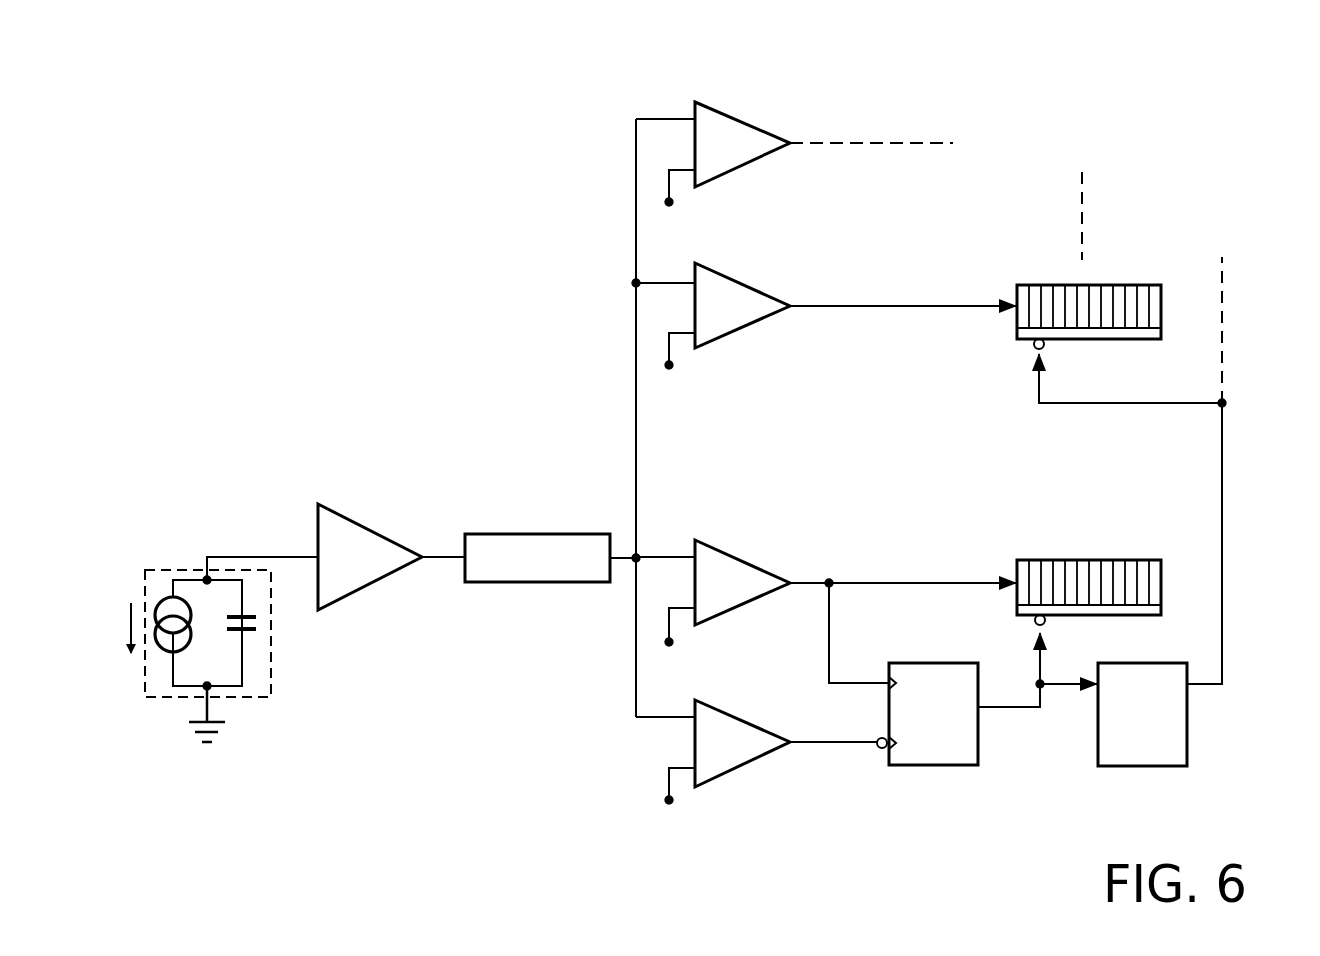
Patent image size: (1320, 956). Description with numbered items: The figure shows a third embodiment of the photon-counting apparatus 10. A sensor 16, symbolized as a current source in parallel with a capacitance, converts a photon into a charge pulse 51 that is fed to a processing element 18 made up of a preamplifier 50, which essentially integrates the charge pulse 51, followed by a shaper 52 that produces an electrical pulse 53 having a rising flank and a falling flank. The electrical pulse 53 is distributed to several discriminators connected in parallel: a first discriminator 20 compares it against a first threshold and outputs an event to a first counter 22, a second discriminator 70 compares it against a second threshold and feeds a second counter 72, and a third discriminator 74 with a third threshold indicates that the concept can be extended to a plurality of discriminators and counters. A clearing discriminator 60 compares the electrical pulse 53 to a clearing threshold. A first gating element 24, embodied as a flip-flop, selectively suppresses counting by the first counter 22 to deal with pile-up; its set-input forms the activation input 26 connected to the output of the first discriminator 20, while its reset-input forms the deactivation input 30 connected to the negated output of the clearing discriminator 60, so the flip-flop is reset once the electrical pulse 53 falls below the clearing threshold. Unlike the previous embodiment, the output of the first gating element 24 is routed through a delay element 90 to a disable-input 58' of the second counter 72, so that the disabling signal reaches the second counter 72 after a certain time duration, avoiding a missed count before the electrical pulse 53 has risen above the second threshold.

The apparatus 10 is at (221, 97).
The sensor 16 is at (185, 582).
The charge pulse 51 is at (262, 497).
The preamplifier 50 is at (370, 557).
The processing element 18 is at (447, 471).
The shaper 52 is at (537, 558).
The electrical pulse 53 is at (594, 482).
The third discriminator 74 is at (794, 171).
The second discriminator 70 is at (826, 332).
The first discriminator 20 is at (826, 610).
The clearing discriminator 60 is at (756, 775).
The second counter 72 is at (1089, 255).
The disable-input 58' is at (1092, 371).
The first counter 22 is at (1089, 590).
The activation input 26 is at (862, 636).
The first gating element 24 is at (993, 714).
The deactivation input 30 is at (876, 774).
The delay element 90 is at (1162, 511).